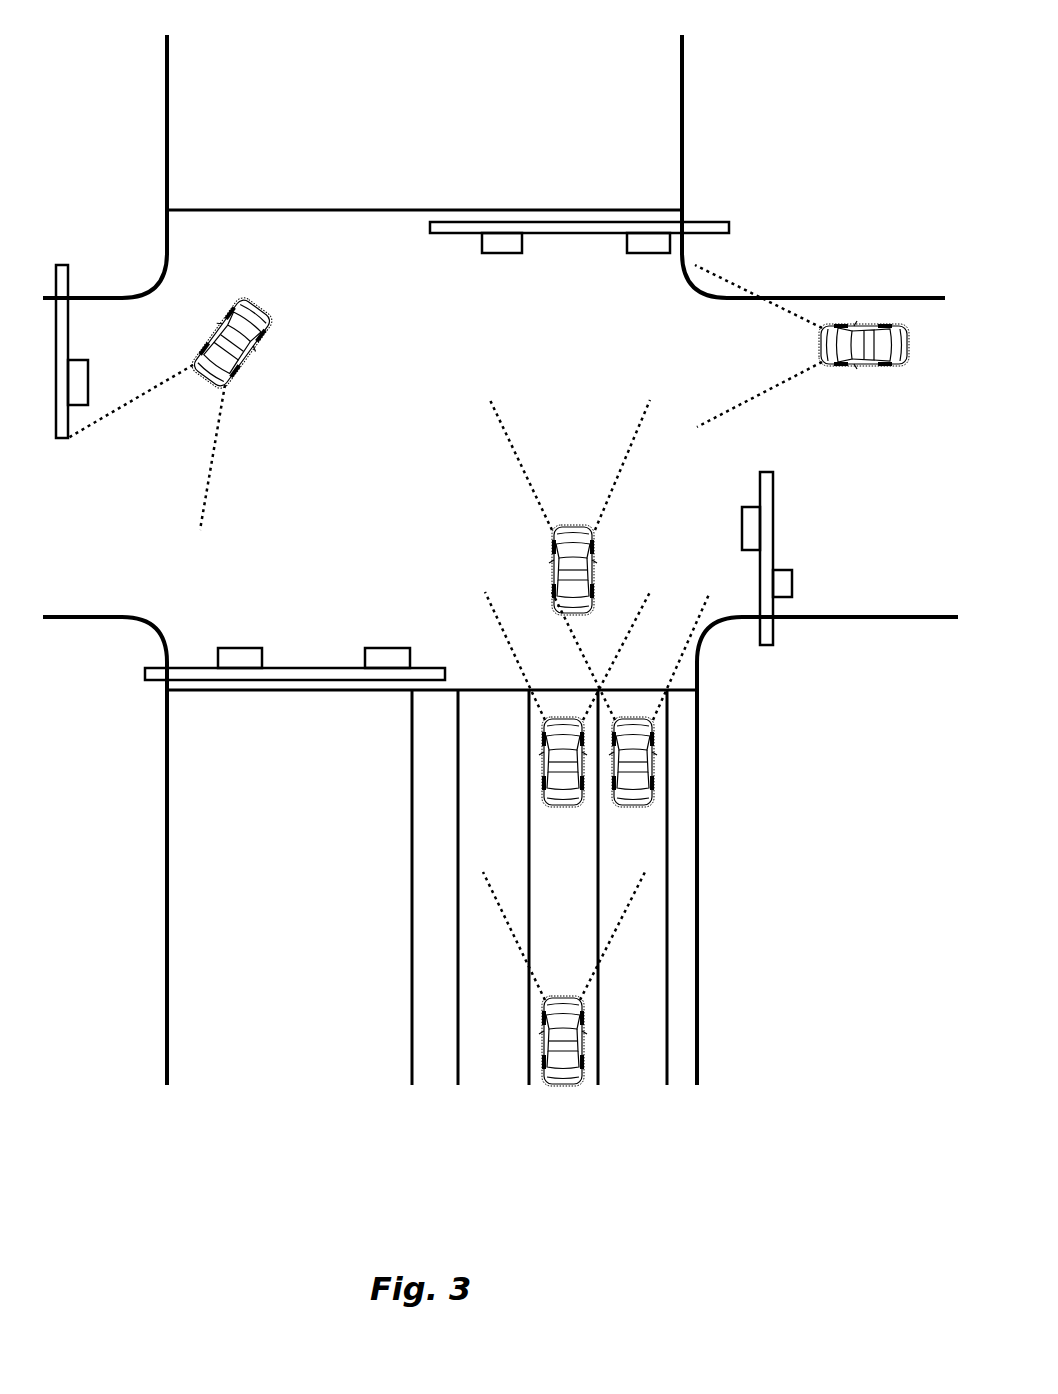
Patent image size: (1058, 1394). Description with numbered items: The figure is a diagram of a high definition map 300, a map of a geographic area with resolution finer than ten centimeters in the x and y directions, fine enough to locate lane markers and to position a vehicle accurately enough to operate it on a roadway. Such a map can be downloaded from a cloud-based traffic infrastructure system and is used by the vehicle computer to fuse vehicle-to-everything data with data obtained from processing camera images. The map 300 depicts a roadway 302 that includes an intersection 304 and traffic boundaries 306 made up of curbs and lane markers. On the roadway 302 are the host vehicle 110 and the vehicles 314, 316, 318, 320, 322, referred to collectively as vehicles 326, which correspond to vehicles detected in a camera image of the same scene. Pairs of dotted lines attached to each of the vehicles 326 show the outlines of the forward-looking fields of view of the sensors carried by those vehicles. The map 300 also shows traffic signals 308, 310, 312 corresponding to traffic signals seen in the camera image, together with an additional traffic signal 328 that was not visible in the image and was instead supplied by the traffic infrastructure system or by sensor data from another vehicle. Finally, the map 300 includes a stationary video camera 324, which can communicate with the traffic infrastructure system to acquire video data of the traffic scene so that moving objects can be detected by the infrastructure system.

The high definition (HD) map 300 is at (452, 32).
The roadway 302 is at (300, 1095).
The intersection 304 is at (436, 436).
The traffic boundaries 306 is at (450, 1133).
The traffic signal 308 is at (320, 668).
The traffic signal 310 is at (767, 472).
The traffic signal 312 is at (580, 235).
The vehicle 314 is at (563, 808).
The vehicle 316 is at (648, 763).
The vehicle 318 is at (860, 367).
The vehicle 320 is at (593, 577).
The vehicle 322 is at (237, 365).
The stationary video camera 324 is at (792, 582).
The vehicles 326 is at (350, 836).
The traffic signal 328 is at (67, 438).
The vehicle 110 is at (560, 1087).